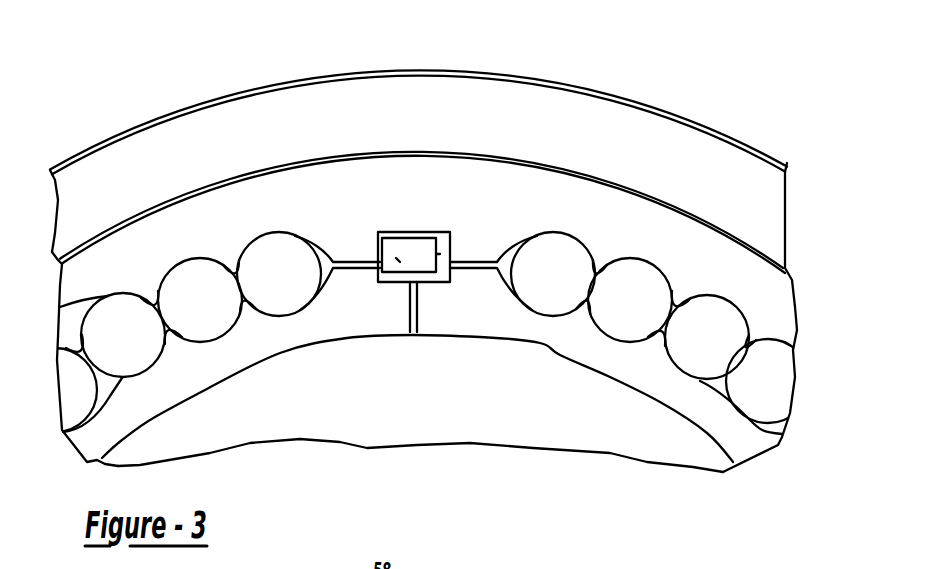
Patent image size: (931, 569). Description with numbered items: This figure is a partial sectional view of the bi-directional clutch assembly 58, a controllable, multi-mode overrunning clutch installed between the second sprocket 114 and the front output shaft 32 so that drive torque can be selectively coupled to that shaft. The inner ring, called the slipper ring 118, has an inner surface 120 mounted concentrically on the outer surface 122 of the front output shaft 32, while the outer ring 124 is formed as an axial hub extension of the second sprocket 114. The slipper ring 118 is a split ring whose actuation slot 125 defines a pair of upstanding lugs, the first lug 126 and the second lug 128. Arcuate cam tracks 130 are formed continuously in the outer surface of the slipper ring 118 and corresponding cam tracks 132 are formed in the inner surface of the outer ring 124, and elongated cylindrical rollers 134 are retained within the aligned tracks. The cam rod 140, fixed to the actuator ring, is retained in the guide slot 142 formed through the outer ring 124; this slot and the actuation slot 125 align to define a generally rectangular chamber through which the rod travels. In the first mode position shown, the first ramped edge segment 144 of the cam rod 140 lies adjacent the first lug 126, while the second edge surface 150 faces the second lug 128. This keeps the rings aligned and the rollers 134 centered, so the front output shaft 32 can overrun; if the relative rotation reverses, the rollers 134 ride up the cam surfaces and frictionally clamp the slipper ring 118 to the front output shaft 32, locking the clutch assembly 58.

The clutch assembly 58 is at (671, 67).
The front output shaft 32 is at (293, 423).
The second sprocket 114 is at (122, 170).
The outer ring 124 is at (207, 213).
The outer surface 122 is at (222, 373).
The cam tracks 132 is at (656, 265).
The cam tracks 130 is at (665, 373).
The rollers 134 is at (767, 383).
The first lug 126 is at (360, 278).
The inner surface 120 is at (660, 403).
The second lug 128 is at (458, 265).
The slipper ring 118 is at (540, 333).
The cam rod 140 is at (415, 226).
The guide slot 142 is at (448, 228).
The first ramped edge segment 144 is at (398, 260).
The second edge surface 150 is at (437, 254).
The actuation slot 125 is at (417, 332).